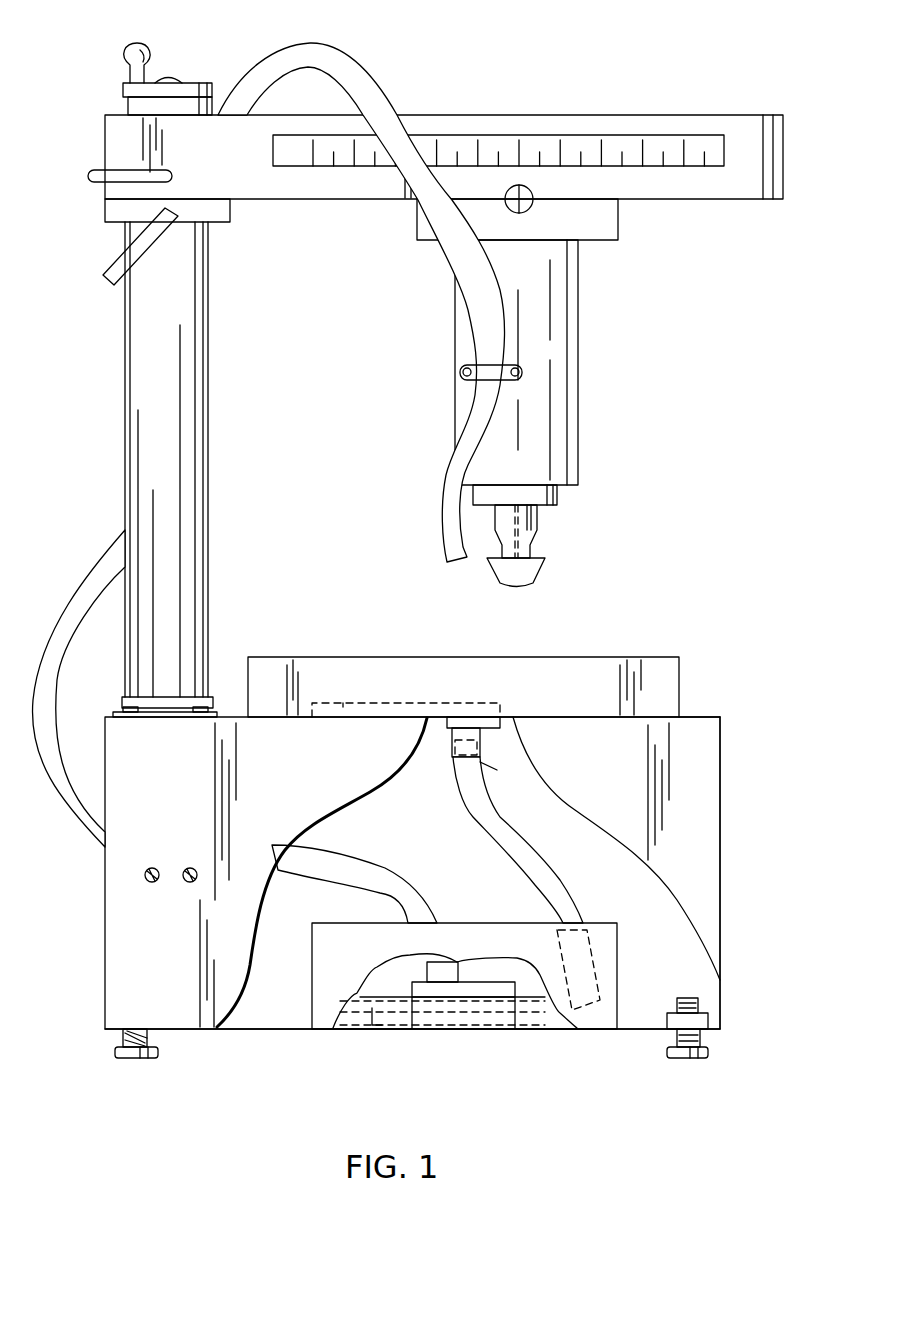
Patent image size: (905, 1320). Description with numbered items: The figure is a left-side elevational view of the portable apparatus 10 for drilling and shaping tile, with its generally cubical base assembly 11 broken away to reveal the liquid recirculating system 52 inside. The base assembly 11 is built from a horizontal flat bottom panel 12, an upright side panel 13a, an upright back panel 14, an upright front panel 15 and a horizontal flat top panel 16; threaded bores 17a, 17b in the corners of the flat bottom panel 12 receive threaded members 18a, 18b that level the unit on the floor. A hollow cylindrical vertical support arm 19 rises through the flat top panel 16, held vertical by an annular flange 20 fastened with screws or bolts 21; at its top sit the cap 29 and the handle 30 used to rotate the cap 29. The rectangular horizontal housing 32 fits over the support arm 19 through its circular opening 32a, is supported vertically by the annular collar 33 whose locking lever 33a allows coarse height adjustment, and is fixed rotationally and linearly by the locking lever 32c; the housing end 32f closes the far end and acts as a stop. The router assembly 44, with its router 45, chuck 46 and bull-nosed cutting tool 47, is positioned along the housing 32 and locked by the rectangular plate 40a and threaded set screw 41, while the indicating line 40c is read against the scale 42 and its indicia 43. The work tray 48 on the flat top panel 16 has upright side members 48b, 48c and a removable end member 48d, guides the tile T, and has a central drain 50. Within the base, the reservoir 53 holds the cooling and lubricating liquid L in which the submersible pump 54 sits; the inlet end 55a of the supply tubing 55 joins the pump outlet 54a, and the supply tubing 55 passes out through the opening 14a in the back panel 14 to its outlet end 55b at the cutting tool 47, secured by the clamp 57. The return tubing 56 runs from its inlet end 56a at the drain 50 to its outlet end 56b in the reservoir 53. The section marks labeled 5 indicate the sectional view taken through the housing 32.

The portable apparatus 10 is at (620, 415).
The base assembly 11 is at (745, 782).
The flat bottom panel 12 is at (270, 1033).
The side panel 13a is at (145, 903).
The back panel 14 is at (105, 970).
The opening 14a is at (102, 845).
The front panel 15 is at (722, 868).
The flat top panel 16 is at (700, 717).
The threaded bore 17a is at (123, 1040).
The threaded bore 17b is at (700, 1025).
The threaded member 18a is at (147, 1042).
The threaded member 18b is at (675, 1035).
The vertical support arm 19 is at (193, 465).
The annular flange 20 is at (125, 699).
The screws or bolts 21 is at (123, 709).
The cap 29 is at (192, 83).
The handle 30 is at (132, 53).
The horizontal housing 32 is at (737, 125).
The circular opening 32a is at (127, 108).
The locking lever 32c is at (103, 173).
The housing end 32f is at (775, 175).
The annular collar 33 is at (115, 212).
The locking lever 33a is at (107, 270).
The rectangular plate 40a is at (618, 220).
The indicating line 40c is at (520, 180).
The threaded set screw 41 is at (527, 210).
The scale 42 is at (537, 157).
The indicia 43 is at (563, 153).
The router assembly 44 is at (590, 458).
The router 45 is at (565, 358).
The chuck 46 is at (540, 520).
The cutting tool 47 is at (545, 570).
The work tray 48 is at (632, 650).
The side member 48b is at (248, 657).
The side member 48c is at (680, 672).
The end member 48d is at (375, 677).
The drain 50 is at (485, 732).
The liquid recirculating system 52 is at (560, 1058).
The reservoir 53 is at (333, 1028).
The submersible pump 54 is at (482, 1013).
The outlet 54a is at (478, 950).
The supply tubing 55 is at (367, 863).
The inlet end 55a is at (398, 962).
The outlet end 55b is at (457, 565).
The return tubing 56 is at (565, 878).
The inlet end 56a is at (480, 762).
The outlet end 56b is at (600, 987).
The clamp 57 is at (480, 375).
The section line for FIG. 5 is at (632, 37).
The tile T is at (343, 707).
The cooling and lubricating liquid L is at (377, 1016).